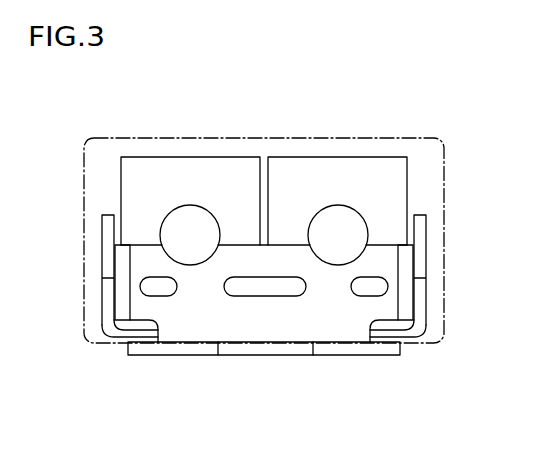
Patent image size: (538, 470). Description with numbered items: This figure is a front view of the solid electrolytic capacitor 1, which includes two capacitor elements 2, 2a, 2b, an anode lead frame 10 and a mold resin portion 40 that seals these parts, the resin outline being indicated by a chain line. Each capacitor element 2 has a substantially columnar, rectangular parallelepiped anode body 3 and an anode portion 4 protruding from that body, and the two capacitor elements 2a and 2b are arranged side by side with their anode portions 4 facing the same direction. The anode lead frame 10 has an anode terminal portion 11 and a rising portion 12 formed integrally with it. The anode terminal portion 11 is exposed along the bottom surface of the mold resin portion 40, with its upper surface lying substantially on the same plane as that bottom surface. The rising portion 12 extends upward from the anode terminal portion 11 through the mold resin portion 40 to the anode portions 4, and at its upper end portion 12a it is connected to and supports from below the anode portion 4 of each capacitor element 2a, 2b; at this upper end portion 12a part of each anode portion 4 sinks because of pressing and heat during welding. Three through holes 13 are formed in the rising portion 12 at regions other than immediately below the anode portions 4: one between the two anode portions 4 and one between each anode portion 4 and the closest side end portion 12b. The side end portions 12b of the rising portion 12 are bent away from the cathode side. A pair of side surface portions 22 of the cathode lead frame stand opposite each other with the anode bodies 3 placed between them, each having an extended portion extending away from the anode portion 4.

The solid electrolytic capacitor 1 is at (455, 122).
The capacitor element 2 is at (265, 192).
The capacitor element 2a is at (378, 82).
The capacitor element 2b is at (235, 82).
The anode body 3 is at (227, 180).
The anode portion 4 is at (188, 222).
The anode lead frame 10 is at (365, 410).
The anode terminal portion 11 is at (345, 348).
The rising portion 12 is at (292, 325).
The upper end portion 12a is at (232, 236).
The side end portion 12b is at (123, 303).
The through hole 13 is at (161, 292).
The side surface portion 22 is at (115, 245).
The mold resin portion 40 is at (403, 135).